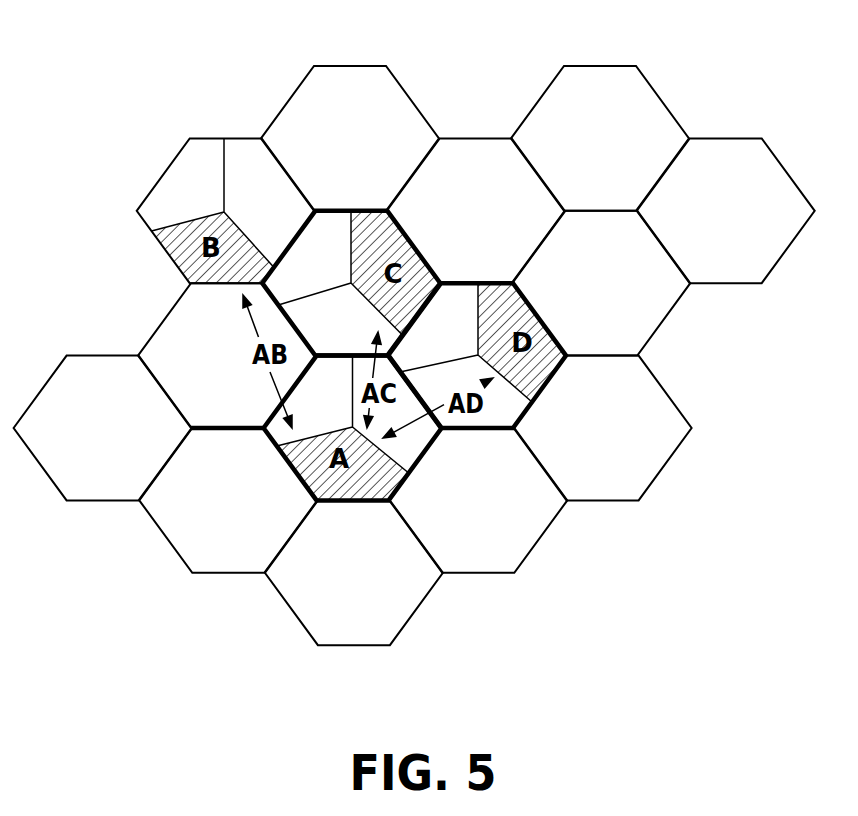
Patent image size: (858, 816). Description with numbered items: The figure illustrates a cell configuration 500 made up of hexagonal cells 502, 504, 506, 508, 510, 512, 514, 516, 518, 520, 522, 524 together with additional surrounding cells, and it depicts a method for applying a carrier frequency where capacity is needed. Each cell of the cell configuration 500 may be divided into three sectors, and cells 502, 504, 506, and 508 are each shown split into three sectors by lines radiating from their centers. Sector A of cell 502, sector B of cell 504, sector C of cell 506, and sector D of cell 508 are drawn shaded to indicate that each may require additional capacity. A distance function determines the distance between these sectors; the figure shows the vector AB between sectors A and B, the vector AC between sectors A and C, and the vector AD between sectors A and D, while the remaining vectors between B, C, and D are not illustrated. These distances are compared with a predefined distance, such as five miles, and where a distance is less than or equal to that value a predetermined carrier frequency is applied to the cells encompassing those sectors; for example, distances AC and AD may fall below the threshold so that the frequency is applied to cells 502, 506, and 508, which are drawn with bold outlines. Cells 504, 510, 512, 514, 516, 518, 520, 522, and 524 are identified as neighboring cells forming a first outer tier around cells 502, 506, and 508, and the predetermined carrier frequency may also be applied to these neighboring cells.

The cell configuration 500 is at (200, 42).
The cell 502 is at (300, 414).
The cell 504 is at (238, 206).
The cell 506 is at (300, 282).
The cell 508 is at (418, 352).
The cell 510 is at (458, 512).
The cell 512 is at (328, 582).
The cell 514 is at (202, 512).
The cell 516 is at (167, 370).
The cell 518 is at (327, 150).
The cell 520 is at (453, 230).
The cell 522 is at (578, 296).
The cell 524 is at (584, 436).